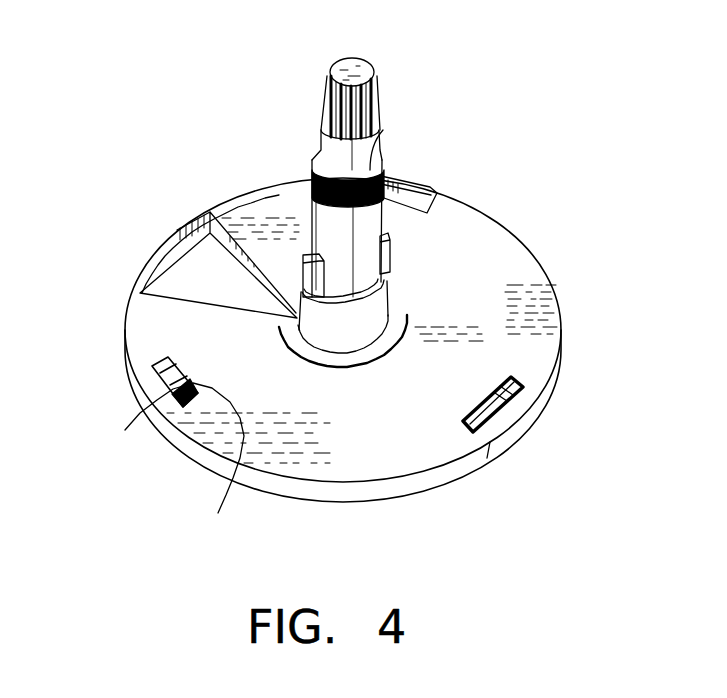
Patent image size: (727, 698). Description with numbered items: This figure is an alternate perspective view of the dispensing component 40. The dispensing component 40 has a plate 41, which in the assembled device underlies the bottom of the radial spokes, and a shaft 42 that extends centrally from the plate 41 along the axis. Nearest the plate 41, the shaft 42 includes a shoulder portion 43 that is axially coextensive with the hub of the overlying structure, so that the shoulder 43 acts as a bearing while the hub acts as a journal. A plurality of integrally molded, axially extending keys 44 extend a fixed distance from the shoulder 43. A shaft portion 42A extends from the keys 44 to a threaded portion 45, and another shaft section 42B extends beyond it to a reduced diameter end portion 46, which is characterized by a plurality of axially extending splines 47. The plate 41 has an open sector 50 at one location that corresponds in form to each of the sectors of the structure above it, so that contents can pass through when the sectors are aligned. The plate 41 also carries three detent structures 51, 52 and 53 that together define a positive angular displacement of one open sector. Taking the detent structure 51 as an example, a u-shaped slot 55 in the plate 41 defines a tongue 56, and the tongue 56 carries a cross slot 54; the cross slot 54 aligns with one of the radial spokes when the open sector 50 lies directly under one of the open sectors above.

The dispensing component 40 is at (402, 352).
The plate 41 is at (443, 441).
The shaft 42 is at (416, 156).
The shaft portion 42A is at (364, 221).
The shaft section 42B is at (372, 150).
The shoulder portion 43 is at (394, 319).
The keys 44 is at (388, 260).
The threaded portion 45 is at (312, 176).
The reduced diameter end portion 46 is at (380, 107).
The splines 47 is at (333, 62).
The open sector 50 is at (182, 277).
The detent structure 51 is at (205, 447).
The detent structure 52 is at (516, 394).
The detent structure 53 is at (440, 186).
The cross slot 54 is at (218, 513).
The u-shaped slot 55 is at (180, 400).
The tongue 56 is at (118, 410).